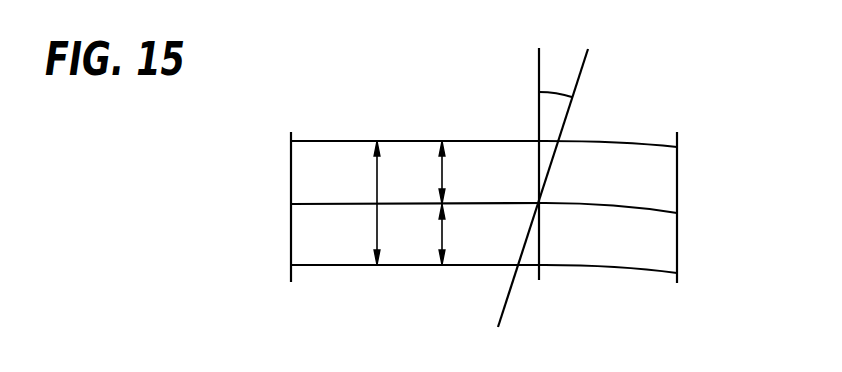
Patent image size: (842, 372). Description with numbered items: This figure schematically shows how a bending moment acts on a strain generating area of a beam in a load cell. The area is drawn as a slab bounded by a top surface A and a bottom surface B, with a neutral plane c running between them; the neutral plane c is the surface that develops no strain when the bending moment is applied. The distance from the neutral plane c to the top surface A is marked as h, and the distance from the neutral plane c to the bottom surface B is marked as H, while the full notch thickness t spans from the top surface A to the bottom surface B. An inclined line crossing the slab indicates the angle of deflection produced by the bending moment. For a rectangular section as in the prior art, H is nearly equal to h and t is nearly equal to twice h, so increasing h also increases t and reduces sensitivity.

The top surface A is at (410, 140).
The bottom surface B is at (410, 265).
The neutral plane c is at (404, 202).
The notch thickness t is at (387, 203).
The distance from neutral plane to top surface h is at (454, 172).
The distance from neutral plane to bottom surface H is at (456, 234).